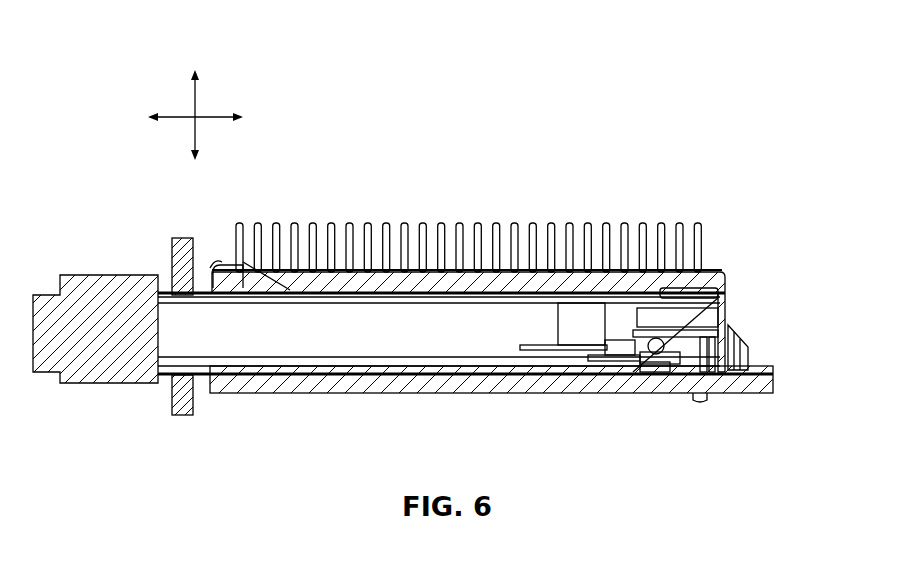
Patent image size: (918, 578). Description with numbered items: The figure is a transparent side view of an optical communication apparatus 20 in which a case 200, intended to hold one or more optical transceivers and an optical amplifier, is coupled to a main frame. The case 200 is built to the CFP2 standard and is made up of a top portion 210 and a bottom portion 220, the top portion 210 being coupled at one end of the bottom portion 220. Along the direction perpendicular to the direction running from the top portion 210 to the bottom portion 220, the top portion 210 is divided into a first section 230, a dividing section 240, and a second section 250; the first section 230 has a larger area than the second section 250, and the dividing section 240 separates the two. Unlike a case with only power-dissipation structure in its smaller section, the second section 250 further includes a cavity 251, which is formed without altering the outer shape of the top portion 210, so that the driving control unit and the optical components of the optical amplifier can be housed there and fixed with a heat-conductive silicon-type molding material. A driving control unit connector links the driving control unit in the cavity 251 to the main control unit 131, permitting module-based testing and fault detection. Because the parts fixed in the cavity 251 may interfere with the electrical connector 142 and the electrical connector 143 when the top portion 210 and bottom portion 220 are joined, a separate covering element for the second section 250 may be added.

The optical communication apparatus 20 is at (105, 64).
The case 200 is at (768, 297).
The top portion 210 is at (435, 102).
The bottom portion 220 is at (405, 360).
The first section 230 is at (380, 327).
The dividing section 240 is at (615, 302).
The second section 250 is at (657, 297).
The cavity 251 is at (720, 322).
The main control unit 131 is at (535, 353).
The electrical connector 142 is at (627, 387).
The electrical connector 143 is at (683, 400).